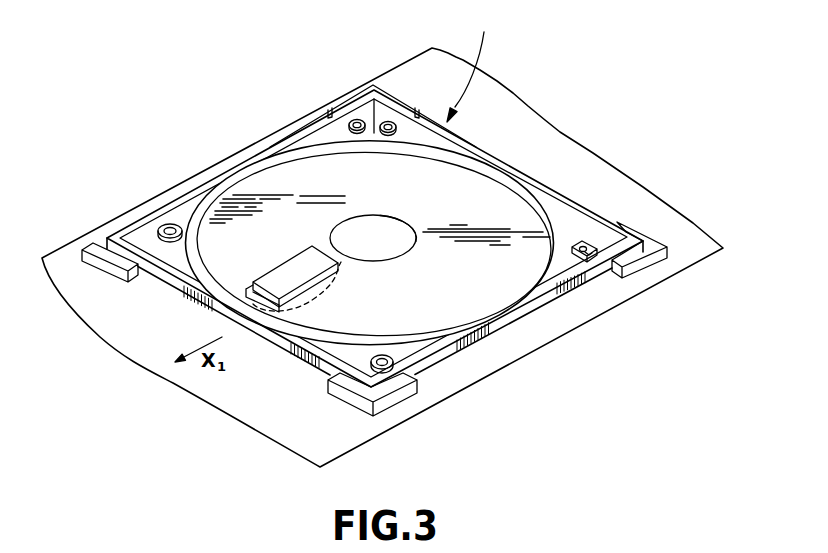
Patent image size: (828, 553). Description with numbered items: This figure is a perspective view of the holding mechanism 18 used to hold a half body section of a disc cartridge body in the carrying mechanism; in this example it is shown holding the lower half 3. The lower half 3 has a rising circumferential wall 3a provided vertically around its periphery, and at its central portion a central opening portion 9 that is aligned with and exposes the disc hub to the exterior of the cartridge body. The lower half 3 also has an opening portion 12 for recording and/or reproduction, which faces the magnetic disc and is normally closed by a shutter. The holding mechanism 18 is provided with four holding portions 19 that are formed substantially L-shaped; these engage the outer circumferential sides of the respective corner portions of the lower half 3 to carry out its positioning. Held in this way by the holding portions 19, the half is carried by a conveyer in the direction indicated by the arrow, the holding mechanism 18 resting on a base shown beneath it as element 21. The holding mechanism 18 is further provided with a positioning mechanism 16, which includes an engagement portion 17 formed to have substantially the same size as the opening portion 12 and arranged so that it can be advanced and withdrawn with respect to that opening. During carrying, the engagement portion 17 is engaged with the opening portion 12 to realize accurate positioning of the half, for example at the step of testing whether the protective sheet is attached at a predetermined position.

The lower half 3 is at (375, 236).
The rising circumferential wall 3a is at (512, 318).
The central opening portion 9 is at (386, 229).
The opening portion 12 is at (270, 283).
The positioning mechanism 16 is at (333, 267).
The engagement portion 17 is at (297, 258).
The holding mechanism 18 is at (471, 66).
The holding portion 19 is at (350, 98).
The stage / base plate 21 is at (328, 437).